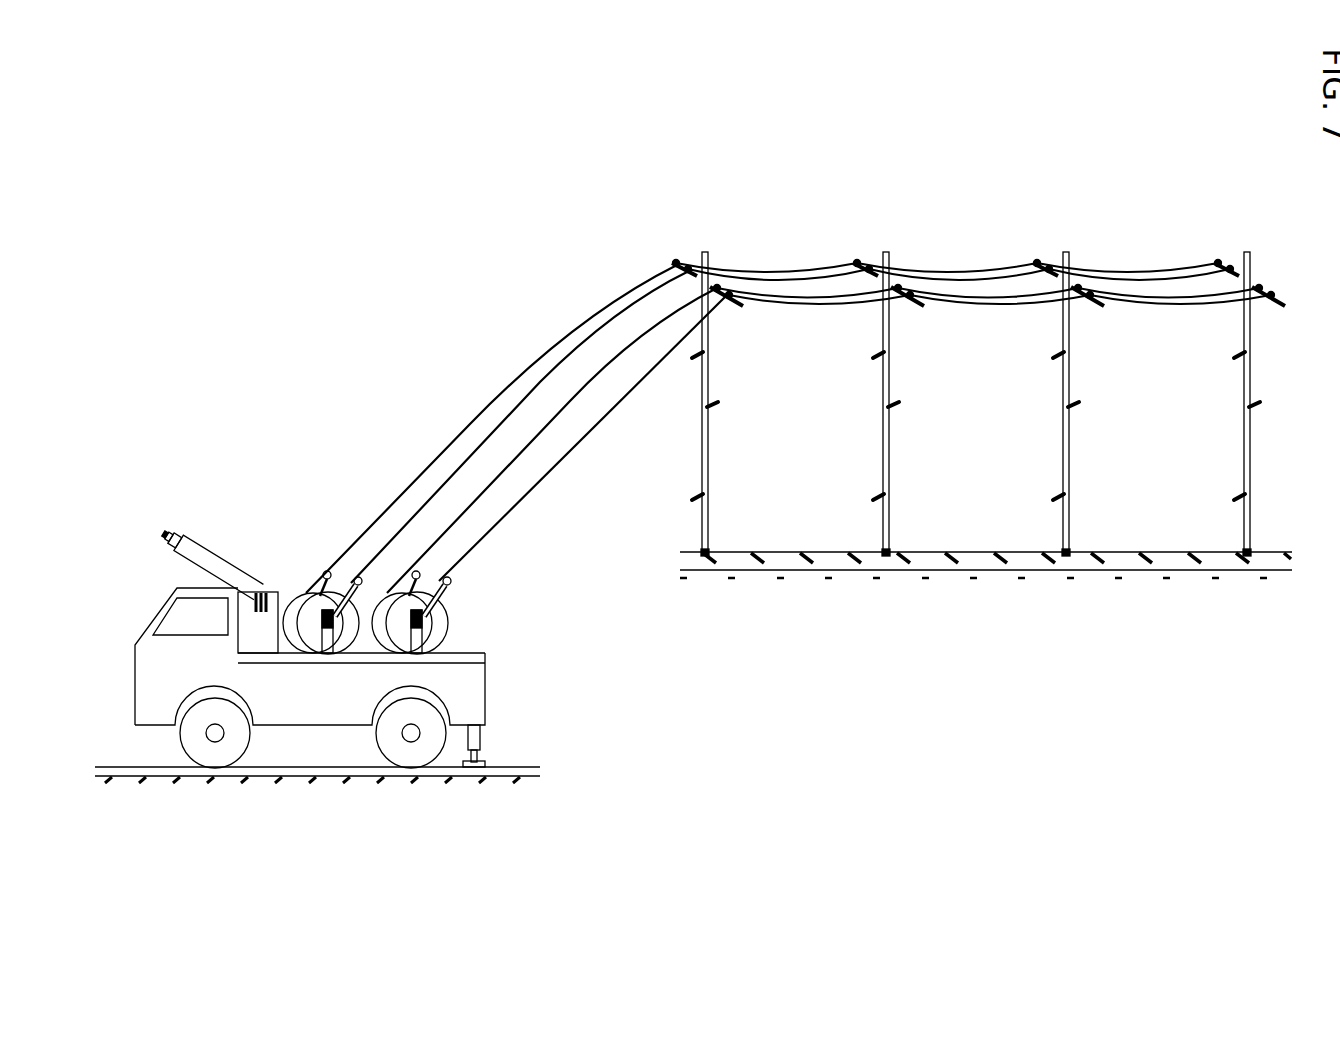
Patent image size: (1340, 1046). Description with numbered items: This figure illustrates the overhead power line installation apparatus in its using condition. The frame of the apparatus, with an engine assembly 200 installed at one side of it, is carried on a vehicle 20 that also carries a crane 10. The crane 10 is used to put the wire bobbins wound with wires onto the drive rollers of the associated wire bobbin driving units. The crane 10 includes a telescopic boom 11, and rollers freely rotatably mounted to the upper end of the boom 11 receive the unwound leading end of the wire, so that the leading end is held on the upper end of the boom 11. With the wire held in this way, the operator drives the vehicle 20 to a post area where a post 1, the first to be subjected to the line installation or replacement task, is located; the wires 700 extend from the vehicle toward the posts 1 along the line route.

The post 1 is at (708, 530).
The crane 10 is at (289, 488).
The telescopic boom 11 is at (273, 540).
The vehicle 20 is at (308, 707).
The engine assembly 200 is at (252, 603).
The cables 700 is at (460, 462).